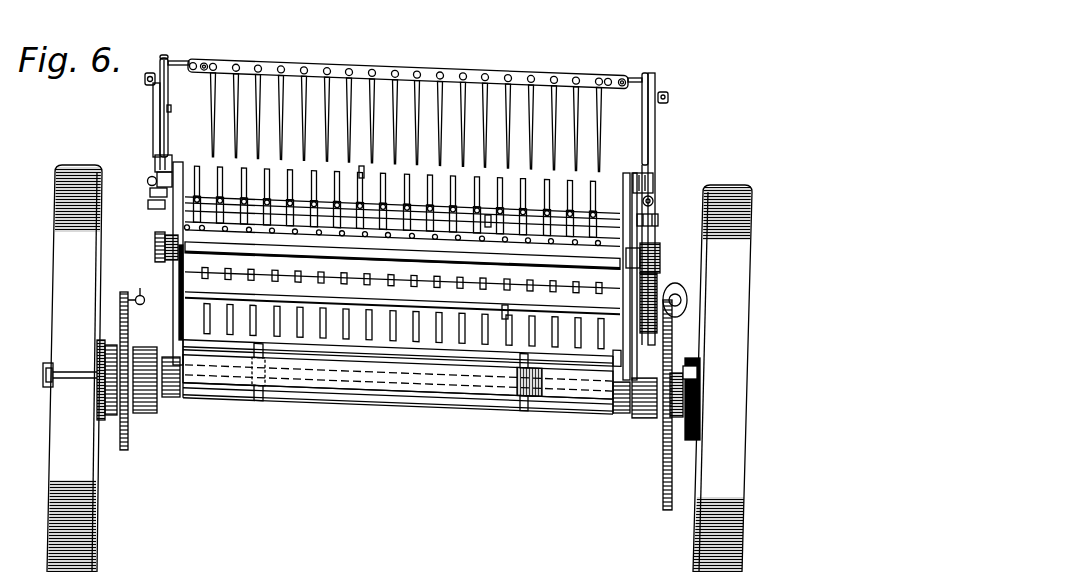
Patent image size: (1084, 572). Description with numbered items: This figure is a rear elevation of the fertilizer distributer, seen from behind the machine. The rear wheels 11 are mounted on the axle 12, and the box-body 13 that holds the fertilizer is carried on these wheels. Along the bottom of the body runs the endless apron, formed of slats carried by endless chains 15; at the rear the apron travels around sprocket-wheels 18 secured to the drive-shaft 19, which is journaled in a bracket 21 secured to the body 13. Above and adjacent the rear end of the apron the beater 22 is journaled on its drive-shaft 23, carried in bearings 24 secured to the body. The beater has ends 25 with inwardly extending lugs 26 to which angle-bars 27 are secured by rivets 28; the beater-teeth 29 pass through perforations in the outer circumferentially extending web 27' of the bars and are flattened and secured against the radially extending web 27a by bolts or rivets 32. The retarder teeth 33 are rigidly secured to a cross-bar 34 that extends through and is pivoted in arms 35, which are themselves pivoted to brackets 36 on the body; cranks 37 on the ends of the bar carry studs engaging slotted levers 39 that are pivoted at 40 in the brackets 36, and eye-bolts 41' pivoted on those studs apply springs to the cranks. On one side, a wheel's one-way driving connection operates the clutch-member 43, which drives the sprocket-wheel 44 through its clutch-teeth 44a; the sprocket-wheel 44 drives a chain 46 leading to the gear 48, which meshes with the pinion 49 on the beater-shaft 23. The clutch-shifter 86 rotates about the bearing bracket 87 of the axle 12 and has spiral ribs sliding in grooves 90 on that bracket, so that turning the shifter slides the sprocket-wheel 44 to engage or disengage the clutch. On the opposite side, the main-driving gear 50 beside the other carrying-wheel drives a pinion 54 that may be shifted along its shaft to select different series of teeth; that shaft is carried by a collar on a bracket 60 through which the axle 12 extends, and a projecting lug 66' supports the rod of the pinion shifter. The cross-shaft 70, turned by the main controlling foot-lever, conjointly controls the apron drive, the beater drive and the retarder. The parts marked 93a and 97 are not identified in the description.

The rear wheels 11 is at (80, 500).
The axle 12 is at (45, 378).
The box-body 13 is at (180, 331).
The endless chains 15 is at (262, 389).
The sprocket-wheels 18 is at (562, 386).
The drive-shaft 19 is at (398, 377).
The bracket 21 is at (150, 386).
The beater 22 is at (403, 226).
The drive-shaft 23 is at (300, 253).
The bearings 24 is at (160, 258).
The ends 25 is at (165, 233).
The inwardly extending lugs 26 is at (186, 295).
The angle-bars 27 is at (404, 310).
The radially extending web 27a is at (290, 187).
The outer circumferentially extending web 27' is at (495, 233).
The rivets 28 is at (185, 205).
The beater-teeth 29 is at (343, 185).
The bolts or rivets 32 is at (250, 206).
The retarder teeth 33 is at (282, 114).
The cross-bar 34 is at (344, 66).
The arms 35 is at (168, 96).
The brackets 36 is at (151, 193).
The cranks 37 is at (172, 58).
The levers 39 is at (154, 128).
The pivot 40 is at (147, 181).
The eye-bolts 41' is at (136, 89).
The clutch-member 43 is at (678, 423).
The sprocket-wheel 44 is at (660, 485).
The clutch-teeth 44a is at (700, 398).
The chain 46 is at (670, 363).
The gear 48 is at (655, 284).
The pinion 49 is at (660, 262).
The main-driving gear 50 is at (118, 448).
The pinion 54 is at (126, 413).
The bracket 60 is at (180, 397).
The projecting lug 66' is at (132, 293).
The cross-shaft 70 is at (514, 399).
The clutch-shifter 86 is at (638, 411).
The bearing bracket 87 is at (618, 408).
The grooves 90 is at (654, 201).
The sleeve 93a is at (691, 375).
The nut 97 is at (148, 205).